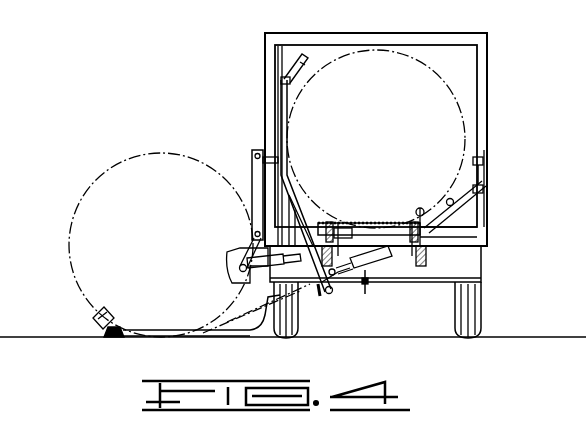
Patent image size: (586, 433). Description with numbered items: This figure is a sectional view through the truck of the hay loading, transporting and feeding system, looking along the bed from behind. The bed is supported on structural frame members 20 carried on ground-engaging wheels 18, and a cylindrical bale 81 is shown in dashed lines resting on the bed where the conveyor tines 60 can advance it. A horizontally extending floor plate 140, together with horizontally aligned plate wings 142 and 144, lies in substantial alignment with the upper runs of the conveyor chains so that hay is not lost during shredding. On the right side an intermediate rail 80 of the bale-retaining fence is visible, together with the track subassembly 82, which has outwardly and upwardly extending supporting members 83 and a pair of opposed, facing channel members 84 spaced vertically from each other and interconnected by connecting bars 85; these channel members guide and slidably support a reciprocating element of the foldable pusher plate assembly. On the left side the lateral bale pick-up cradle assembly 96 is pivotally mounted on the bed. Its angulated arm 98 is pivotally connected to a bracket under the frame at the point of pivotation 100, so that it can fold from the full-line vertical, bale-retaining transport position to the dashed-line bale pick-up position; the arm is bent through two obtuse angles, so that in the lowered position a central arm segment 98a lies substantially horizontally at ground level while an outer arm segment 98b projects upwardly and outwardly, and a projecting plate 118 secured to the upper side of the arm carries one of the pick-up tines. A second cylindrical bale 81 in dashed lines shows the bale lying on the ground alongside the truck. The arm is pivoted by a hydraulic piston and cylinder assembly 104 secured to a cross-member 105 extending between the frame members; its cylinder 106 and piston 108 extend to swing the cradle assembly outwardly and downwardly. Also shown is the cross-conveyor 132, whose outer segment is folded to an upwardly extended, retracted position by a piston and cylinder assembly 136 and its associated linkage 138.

The ground-engaging wheels 18 is at (482, 318).
The structural frame members 20 is at (428, 257).
The tines 60 is at (438, 208).
The intermediate rail 80 is at (448, 198).
The cylindrical bale 81 is at (381, 122).
The track subassembly 82 is at (489, 190).
The supporting members 83 is at (470, 200).
The channel members 84 is at (483, 160).
The connecting bars 85 is at (484, 167).
The bale pick-up cradle assembly 96 is at (276, 127).
The angulated arm 98 is at (282, 102).
The central arm segment 98a is at (165, 334).
The outer arm segment 98b is at (295, 70).
The point of pivotation 100 is at (326, 300).
The hydraulic piston and cylinder assembly 104 is at (365, 296).
The cross-member 105 is at (386, 262).
The cylinder 106 is at (343, 227).
The piston 108 is at (341, 300).
The projecting plate 118 is at (238, 296).
The cross-conveyor 132 is at (251, 176).
The piston and cylinder assembly 136 is at (246, 274).
The linkage 138 is at (243, 262).
The floor plate 140 is at (377, 222).
The plate wing 142 is at (308, 226).
The plate wing 144 is at (432, 231).